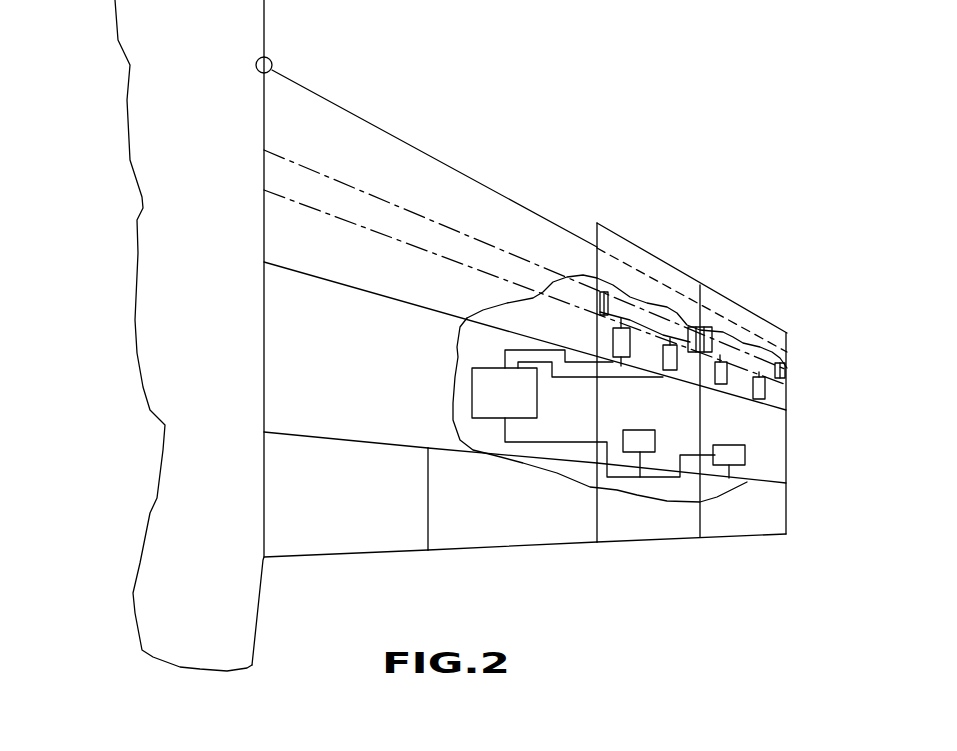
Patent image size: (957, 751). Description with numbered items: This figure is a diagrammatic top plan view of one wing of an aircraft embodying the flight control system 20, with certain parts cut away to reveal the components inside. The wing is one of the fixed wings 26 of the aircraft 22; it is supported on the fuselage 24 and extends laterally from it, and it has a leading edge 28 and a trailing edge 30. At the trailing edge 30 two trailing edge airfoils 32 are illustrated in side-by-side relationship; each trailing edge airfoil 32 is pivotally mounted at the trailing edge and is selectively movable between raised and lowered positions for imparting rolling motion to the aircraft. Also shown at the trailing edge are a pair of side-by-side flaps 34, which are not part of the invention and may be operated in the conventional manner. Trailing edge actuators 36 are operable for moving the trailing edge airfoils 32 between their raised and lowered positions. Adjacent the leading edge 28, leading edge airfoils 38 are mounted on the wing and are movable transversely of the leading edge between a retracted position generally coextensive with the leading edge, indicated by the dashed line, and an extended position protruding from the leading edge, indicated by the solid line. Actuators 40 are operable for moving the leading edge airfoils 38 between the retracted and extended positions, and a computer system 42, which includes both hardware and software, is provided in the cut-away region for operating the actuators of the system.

The flight control system 20 is at (549, 324).
The aircraft 22 is at (154, 335).
The fuselage 24 is at (140, 133).
The fixed wings 26 is at (408, 132).
The leading edge 28 is at (512, 201).
The trailing edge 30 is at (375, 445).
The trailing edge airfoil 32 is at (735, 530).
The flaps 34 is at (527, 533).
The trailing edge actuators 36 is at (737, 453).
The leading edge airfoils 38 is at (722, 300).
The actuators 40 is at (765, 390).
The computer system 42 is at (482, 395).